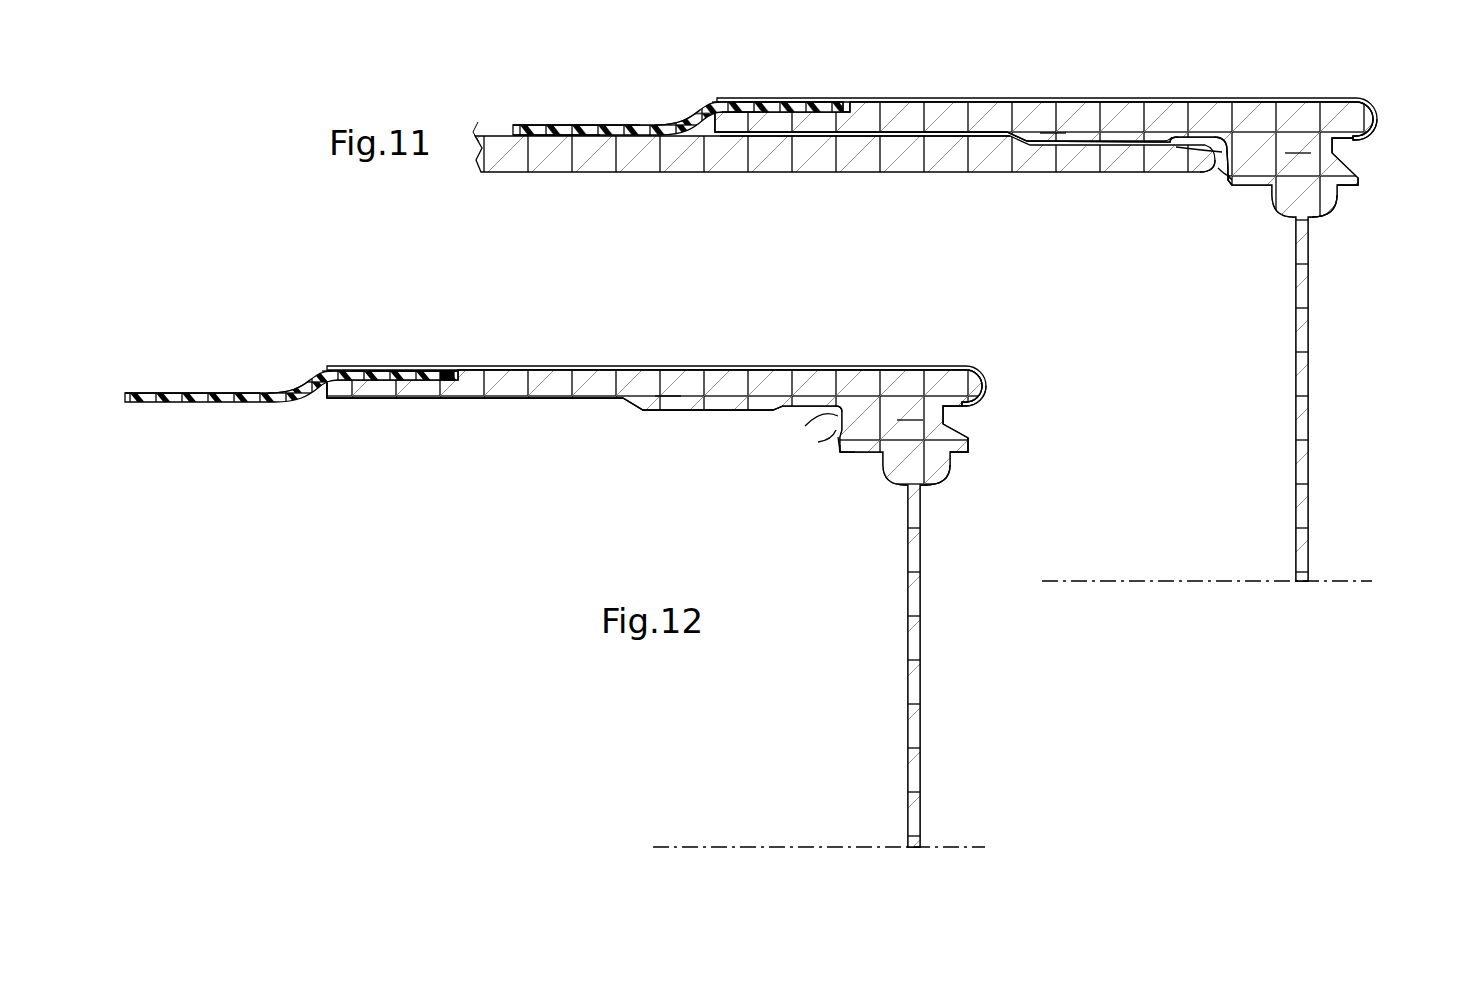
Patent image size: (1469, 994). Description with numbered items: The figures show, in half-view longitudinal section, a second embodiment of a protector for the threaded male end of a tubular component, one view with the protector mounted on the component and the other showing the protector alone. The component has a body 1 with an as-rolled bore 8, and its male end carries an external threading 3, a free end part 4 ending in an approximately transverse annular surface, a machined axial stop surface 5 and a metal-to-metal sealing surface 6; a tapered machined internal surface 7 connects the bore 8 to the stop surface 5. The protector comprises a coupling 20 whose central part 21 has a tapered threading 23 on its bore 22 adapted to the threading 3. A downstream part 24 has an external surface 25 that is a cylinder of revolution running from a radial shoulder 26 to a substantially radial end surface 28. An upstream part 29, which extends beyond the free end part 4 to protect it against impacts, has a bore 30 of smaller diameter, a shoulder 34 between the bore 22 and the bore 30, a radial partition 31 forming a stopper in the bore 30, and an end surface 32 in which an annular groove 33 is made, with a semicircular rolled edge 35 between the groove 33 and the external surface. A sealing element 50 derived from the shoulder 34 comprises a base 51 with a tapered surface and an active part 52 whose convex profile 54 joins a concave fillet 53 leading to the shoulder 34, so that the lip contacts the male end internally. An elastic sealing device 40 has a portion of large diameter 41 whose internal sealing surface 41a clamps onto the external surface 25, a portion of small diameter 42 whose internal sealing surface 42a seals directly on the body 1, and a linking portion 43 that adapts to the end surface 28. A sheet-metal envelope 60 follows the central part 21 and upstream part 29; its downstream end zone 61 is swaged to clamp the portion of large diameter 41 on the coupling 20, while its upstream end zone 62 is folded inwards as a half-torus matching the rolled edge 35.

In FIG. 11, the body 1 is at (527, 180).
In FIG. 11, the external threading 3 is at (1003, 134).
In FIG. 11, the free end part 4 is at (1168, 136).
In FIG. 11, the axial stop surface 5 is at (1238, 160).
In FIG. 11, the metal-to-metal sealing surface 6 is at (1236, 150).
In FIG. 11, the internal surface 7 is at (1212, 172).
In FIG. 11, the bore 8 is at (905, 173).
In FIG. 11, the coupling 20 is at (1077, 299).
In FIG. 12, the coupling 20 is at (665, 583).
In FIG. 11, the central part 21 is at (941, 123).
In FIG. 12, the central part 21 is at (555, 390).
In FIG. 11, the bore 22 is at (1176, 136).
In FIG. 12, the bore 22 is at (787, 406).
In FIG. 11, the threading 23 is at (1085, 146).
In FIG. 12, the threading 23 is at (700, 411).
In FIG. 11, the downstream part 24 is at (772, 126).
In FIG. 12, the downstream part 24 is at (365, 400).
In FIG. 11, the external surface 25 is at (822, 100).
In FIG. 12, the external surface 25 is at (432, 372).
In FIG. 11, the radial shoulder 26 is at (836, 114).
In FIG. 12, the radial shoulder 26 is at (448, 372).
In FIG. 12, the end surface 28 is at (325, 386).
In FIG. 11, the upstream part 29 is at (1275, 160).
In FIG. 12, the upstream part 29 is at (888, 428).
In FIG. 11, the bore 30 is at (1333, 198).
In FIG. 12, the bore 30 is at (948, 468).
In FIG. 11, the radial partition 31 is at (1306, 330).
In FIG. 12, the radial partition 31 is at (918, 633).
In FIG. 11, the end surface 32 is at (1360, 183).
In FIG. 12, the end surface 32 is at (972, 447).
In FIG. 11, the annular groove 33 is at (1340, 146).
In FIG. 12, the annular groove 33 is at (950, 416).
In FIG. 11, the shoulder 34 is at (1224, 140).
In FIG. 12, the shoulder 34 is at (830, 406).
In FIG. 11, the rolled edge 35 is at (1378, 118).
In FIG. 12, the rolled edge 35 is at (987, 385).
In FIG. 11, the sealing device 40 is at (648, 113).
In FIG. 12, the sealing device 40 is at (237, 382).
In FIG. 11, the portion of large diameter 41 is at (790, 104).
In FIG. 12, the portion of large diameter 41 is at (400, 374).
In FIG. 11, the internal sealing surface 41a is at (727, 118).
In FIG. 11, the portion of small diameter 42 is at (528, 127).
In FIG. 12, the portion of small diameter 42 is at (135, 394).
In FIG. 11, the internal sealing surface 42a is at (553, 138).
In FIG. 11, the linking portion 43 is at (697, 108).
In FIG. 12, the linking portion 43 is at (300, 385).
In FIG. 11, the sealing element 50 is at (1230, 172).
In FIG. 12, the sealing element 50 is at (836, 450).
In FIG. 11, the base 51 is at (1232, 186).
In FIG. 12, the base 51 is at (846, 452).
In FIG. 11, the active part 52 is at (1226, 166).
In FIG. 12, the active part 52 is at (832, 446).
In FIG. 12, the concave fillet 53 is at (815, 420).
In FIG. 11, the convex profile 54 is at (1216, 152).
In FIG. 12, the convex profile 54 is at (822, 438).
In FIG. 11, the envelope 60 is at (1097, 98).
In FIG. 12, the envelope 60 is at (712, 367).
In FIG. 11, the downstream end zone 61 is at (718, 100).
In FIG. 12, the downstream end zone 61 is at (333, 368).
In FIG. 11, the upstream end zone 62 is at (1370, 140).
In FIG. 12, the upstream end zone 62 is at (985, 405).